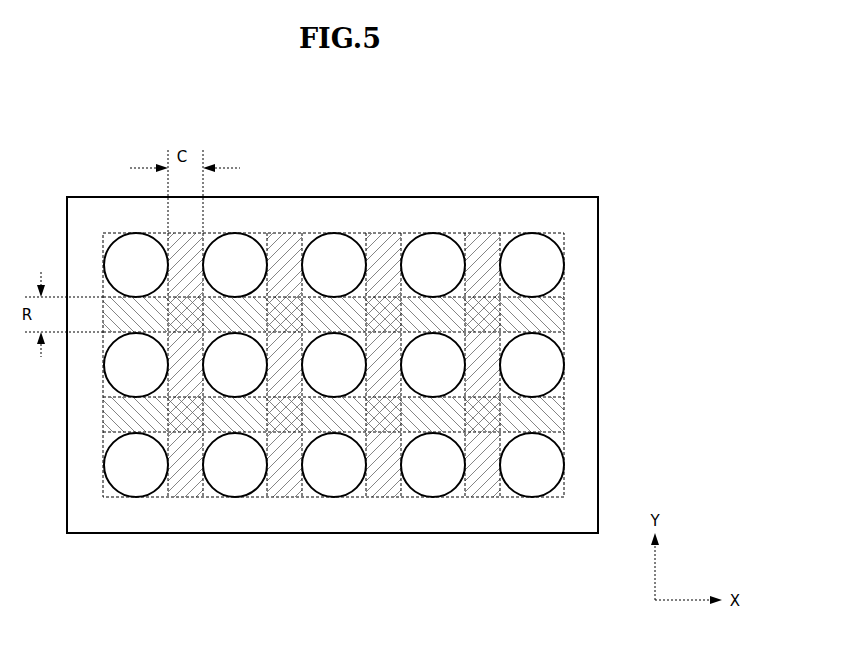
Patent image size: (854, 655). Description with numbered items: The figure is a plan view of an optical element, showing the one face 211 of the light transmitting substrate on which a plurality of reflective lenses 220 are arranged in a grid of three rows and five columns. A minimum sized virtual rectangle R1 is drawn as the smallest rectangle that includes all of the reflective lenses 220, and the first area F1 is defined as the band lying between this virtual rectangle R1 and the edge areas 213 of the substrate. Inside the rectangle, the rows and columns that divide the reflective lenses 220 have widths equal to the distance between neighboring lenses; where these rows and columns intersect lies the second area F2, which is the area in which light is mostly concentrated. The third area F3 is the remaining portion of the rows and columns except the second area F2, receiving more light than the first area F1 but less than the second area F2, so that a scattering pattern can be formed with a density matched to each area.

The one face 211 is at (492, 148).
The edge areas 213 is at (384, 414).
The reflective lenses 220 is at (429, 262).
The first area F1 is at (585, 213).
The second area F2 is at (487, 420).
The third area F3 is at (630, 422).
The minimum sized virtual rectangle R1 is at (566, 278).